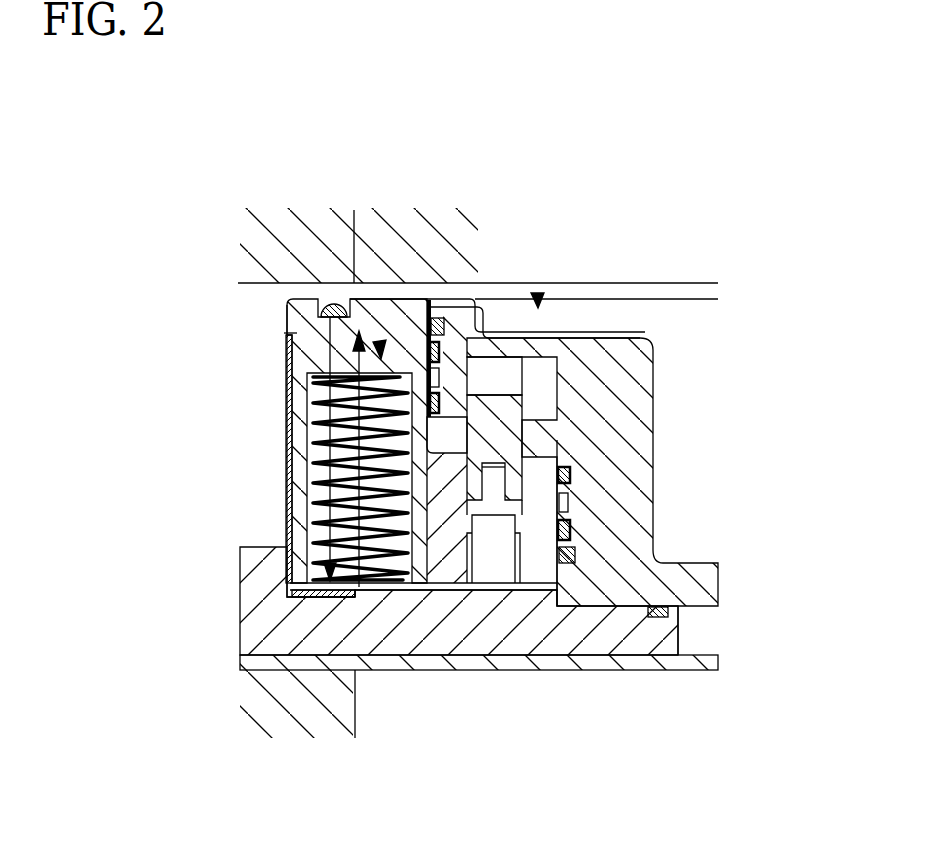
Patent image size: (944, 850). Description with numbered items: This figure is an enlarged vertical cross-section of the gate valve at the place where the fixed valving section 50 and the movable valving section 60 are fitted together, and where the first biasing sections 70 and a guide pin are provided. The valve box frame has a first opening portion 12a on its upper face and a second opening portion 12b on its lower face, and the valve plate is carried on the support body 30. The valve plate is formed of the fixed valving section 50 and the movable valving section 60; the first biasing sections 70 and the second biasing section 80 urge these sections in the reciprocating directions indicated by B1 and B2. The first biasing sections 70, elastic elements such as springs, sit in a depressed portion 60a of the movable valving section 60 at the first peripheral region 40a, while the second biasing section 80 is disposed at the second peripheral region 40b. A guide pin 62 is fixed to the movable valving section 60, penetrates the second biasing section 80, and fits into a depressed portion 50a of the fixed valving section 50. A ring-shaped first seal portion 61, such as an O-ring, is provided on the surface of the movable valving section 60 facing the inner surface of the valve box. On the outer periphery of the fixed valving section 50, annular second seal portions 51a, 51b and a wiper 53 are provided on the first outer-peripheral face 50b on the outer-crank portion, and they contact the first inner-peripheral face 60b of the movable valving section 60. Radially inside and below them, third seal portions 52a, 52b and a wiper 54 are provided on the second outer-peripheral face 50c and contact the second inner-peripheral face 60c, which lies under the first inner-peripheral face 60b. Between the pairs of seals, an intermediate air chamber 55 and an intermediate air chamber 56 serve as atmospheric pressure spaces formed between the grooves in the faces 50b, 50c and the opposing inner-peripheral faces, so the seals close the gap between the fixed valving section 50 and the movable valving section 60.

The first opening portion 12a is at (540, 240).
The second opening portion 12b is at (527, 715).
The support body 30 is at (285, 623).
The first peripheral region 40a is at (378, 342).
The second peripheral region 40b is at (538, 296).
The fixed valving section 50 is at (628, 360).
The depressed portion 50a is at (570, 308).
The first outer-peripheral face 50b is at (430, 400).
The second outer-peripheral face 50c is at (530, 568).
The second seal portion 51a is at (430, 343).
The second seal portion 51b is at (410, 337).
The third seal portion 52a is at (562, 530).
The third seal portion 52b is at (562, 478).
The wiper 53 is at (444, 318).
The wiper 54 is at (568, 556).
The intermediate air chamber 55 is at (430, 375).
The intermediate air chamber 56 is at (565, 502).
The movable valving section 60 is at (436, 565).
The depressed portion 60a is at (397, 567).
The first inner-peripheral face 60b is at (432, 437).
The second inner-peripheral face 60c is at (550, 568).
The first seal portion 61 is at (332, 293).
The guide pin 62 is at (497, 417).
The first biasing section 70 is at (312, 495).
The second biasing section 80 is at (543, 437).
The reciprocating direction B1 is at (355, 330).
The reciprocating direction B2 is at (335, 350).